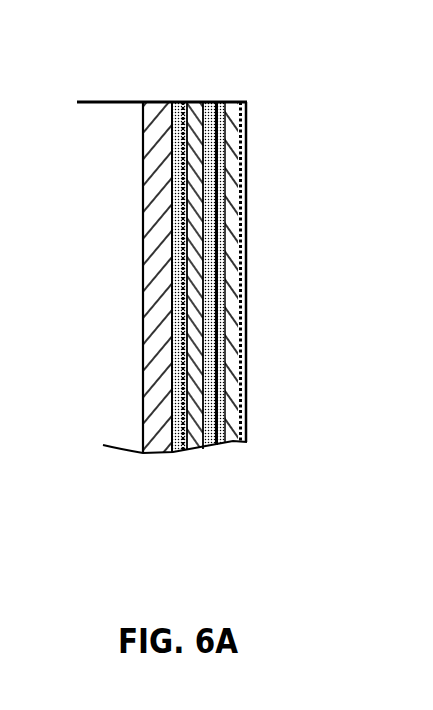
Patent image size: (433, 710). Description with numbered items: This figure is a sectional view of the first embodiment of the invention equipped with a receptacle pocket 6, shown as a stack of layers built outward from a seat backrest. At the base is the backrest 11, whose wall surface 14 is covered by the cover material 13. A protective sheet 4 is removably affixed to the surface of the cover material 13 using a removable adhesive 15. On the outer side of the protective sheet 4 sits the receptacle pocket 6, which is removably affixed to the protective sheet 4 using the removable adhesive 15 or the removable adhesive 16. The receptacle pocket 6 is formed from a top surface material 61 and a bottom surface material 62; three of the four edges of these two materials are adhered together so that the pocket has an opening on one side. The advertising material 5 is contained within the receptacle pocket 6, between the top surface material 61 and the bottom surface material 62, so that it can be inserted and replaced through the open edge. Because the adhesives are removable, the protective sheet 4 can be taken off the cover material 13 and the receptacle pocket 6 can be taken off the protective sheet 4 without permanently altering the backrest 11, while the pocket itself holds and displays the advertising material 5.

The backrest 11 is at (152, 163).
The cover material 13 is at (158, 292).
The wall surface 14 is at (170, 222).
The removable adhesive 15 is at (185, 102).
The protective sheet 4 is at (197, 102).
The removable adhesive 16 is at (212, 102).
The top surface material 61 is at (222, 155).
The receptacle pocket 6 is at (247, 208).
The advertising material 5 is at (230, 292).
The bottom surface material 62 is at (227, 430).